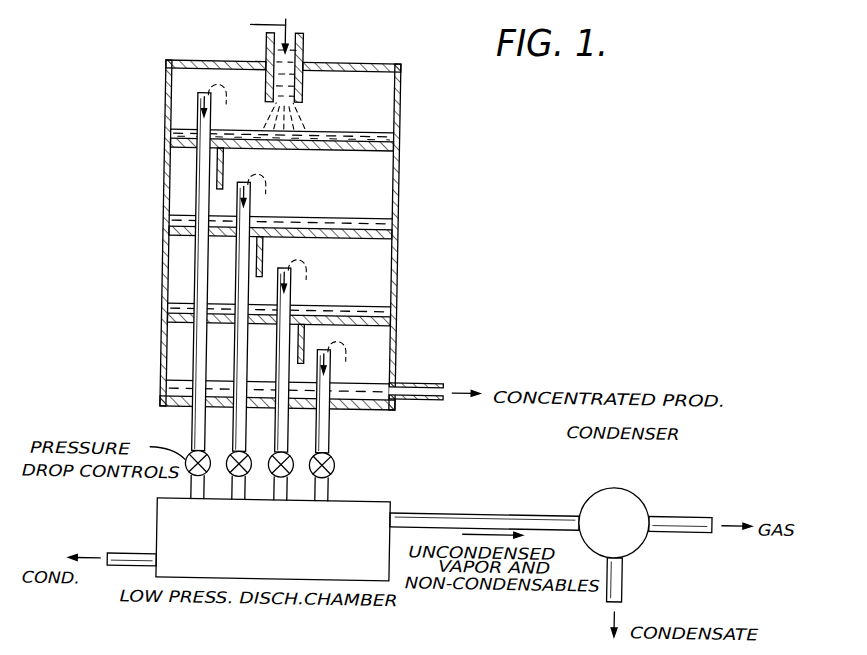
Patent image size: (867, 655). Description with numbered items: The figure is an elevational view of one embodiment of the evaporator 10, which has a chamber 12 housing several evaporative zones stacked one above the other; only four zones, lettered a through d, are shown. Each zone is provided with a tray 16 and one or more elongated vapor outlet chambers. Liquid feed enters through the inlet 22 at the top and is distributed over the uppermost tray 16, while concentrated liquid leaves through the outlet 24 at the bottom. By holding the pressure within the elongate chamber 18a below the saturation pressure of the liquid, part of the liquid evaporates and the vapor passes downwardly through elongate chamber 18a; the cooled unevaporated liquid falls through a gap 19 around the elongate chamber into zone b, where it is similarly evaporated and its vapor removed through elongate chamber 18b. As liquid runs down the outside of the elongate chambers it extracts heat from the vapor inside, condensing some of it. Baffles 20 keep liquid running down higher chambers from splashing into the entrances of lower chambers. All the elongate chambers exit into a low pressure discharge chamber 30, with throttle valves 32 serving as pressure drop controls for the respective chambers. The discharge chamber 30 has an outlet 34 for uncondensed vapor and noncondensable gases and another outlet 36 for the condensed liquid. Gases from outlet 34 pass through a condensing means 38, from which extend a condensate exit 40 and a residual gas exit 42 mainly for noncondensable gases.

The evaporator 10 is at (276, 259).
The chamber 12 is at (399, 178).
The tray 16 is at (176, 151).
The elongate vapor outlet chamber 18a is at (197, 102).
The elongate vapor outlet chamber 18b is at (237, 258).
The gap 19 is at (188, 140).
The baffle 20 is at (222, 162).
The inlet 22 is at (300, 48).
The outlet 24 is at (423, 381).
The low pressure discharge chamber 30 is at (285, 548).
The throttle valve 32 is at (339, 462).
The outlet 34 is at (460, 511).
The outlet 36 is at (133, 556).
The condensing means 38 is at (616, 482).
The condensate exit 40 is at (628, 571).
The residual gas exit 42 is at (683, 510).